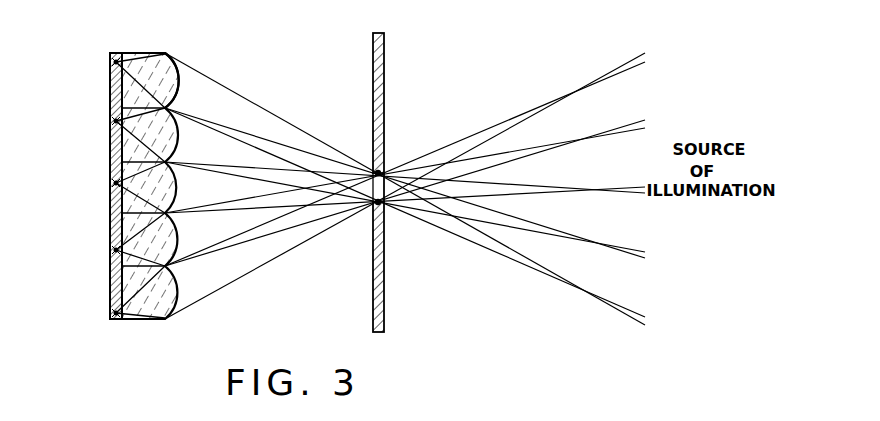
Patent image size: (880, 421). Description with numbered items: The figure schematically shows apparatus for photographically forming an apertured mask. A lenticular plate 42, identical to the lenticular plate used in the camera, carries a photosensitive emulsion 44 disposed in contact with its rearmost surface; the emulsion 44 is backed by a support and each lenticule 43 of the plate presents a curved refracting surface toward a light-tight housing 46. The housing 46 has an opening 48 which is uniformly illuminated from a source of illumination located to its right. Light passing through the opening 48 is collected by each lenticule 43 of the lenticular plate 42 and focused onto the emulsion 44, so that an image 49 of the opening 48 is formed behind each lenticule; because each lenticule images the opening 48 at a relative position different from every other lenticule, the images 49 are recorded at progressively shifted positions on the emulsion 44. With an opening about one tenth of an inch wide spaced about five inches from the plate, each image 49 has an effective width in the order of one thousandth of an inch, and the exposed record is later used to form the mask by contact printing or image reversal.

The lenticular plate 42 is at (182, 58).
The lens element 43 is at (170, 68).
The photosensitive emulsion 44 is at (110, 85).
The light-tight housing 46 is at (385, 67).
The opening 48 is at (381, 172).
The image 49 is at (112, 61).